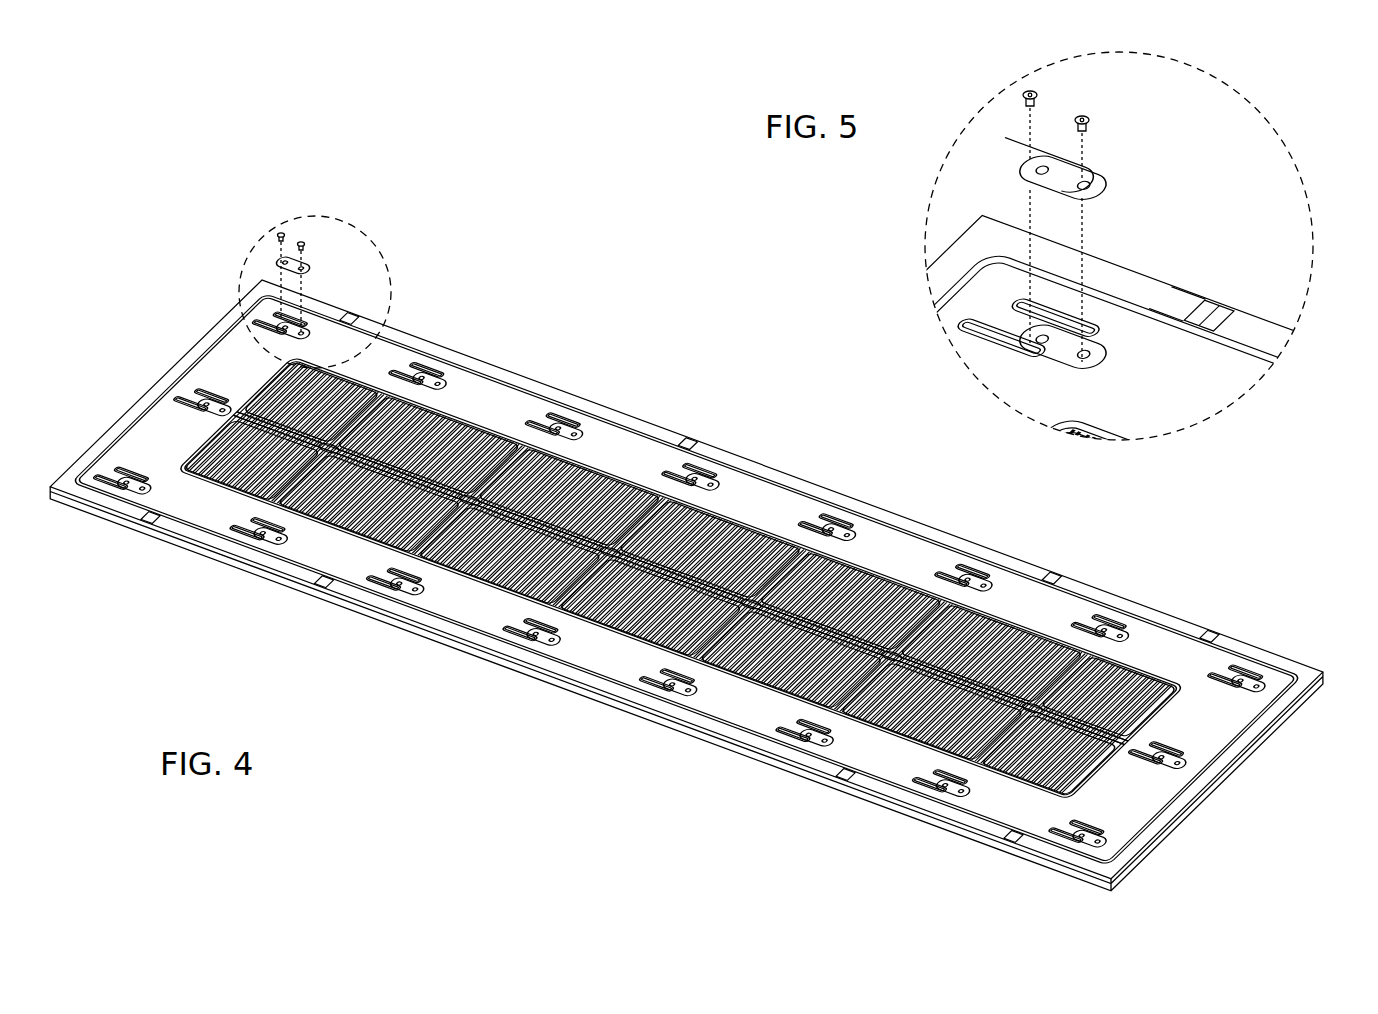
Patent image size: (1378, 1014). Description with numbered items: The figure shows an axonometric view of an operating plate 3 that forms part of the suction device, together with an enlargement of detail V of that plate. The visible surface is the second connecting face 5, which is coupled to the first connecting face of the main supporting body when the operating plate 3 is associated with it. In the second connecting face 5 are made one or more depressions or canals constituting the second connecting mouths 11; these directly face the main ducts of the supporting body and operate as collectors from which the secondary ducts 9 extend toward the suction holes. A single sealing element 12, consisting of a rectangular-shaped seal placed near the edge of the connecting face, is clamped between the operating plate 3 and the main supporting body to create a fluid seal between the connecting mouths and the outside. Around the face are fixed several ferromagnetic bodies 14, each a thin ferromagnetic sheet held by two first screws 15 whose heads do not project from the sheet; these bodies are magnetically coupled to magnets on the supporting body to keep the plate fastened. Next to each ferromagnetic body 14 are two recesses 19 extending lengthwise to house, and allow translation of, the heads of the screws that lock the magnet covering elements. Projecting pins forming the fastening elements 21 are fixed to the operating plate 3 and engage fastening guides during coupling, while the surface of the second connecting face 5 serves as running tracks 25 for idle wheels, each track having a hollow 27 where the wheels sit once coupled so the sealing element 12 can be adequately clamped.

In FIG. 4, the operating plate 3 is at (686, 585).
In FIG. 4, the second connecting face 5 is at (600, 447).
In FIG. 4, the secondary ducts 9 is at (456, 413).
In FIG. 5, the secondary ducts 9 is at (1120, 414).
In FIG. 4, the second connecting mouths 11 is at (502, 428).
In FIG. 5, the second connecting mouths 11 is at (1154, 432).
In FIG. 5, the sealing element 12 is at (950, 283).
In FIG. 4, the ferromagnetic body 14 is at (1107, 624).
In FIG. 5, the ferromagnetic body 14 is at (1058, 178).
In FIG. 5, the first screws 15 is at (1022, 96).
In FIG. 5, the recesses 19 is at (977, 305).
In FIG. 5, the fastening element 21 is at (1122, 265).
In FIG. 5, the running track 25 is at (1205, 292).
In FIG. 4, the hollow 27 is at (1057, 575).
In FIG. 5, the hollow 27 is at (1234, 303).
In FIG. 4, the detail V is at (380, 250).